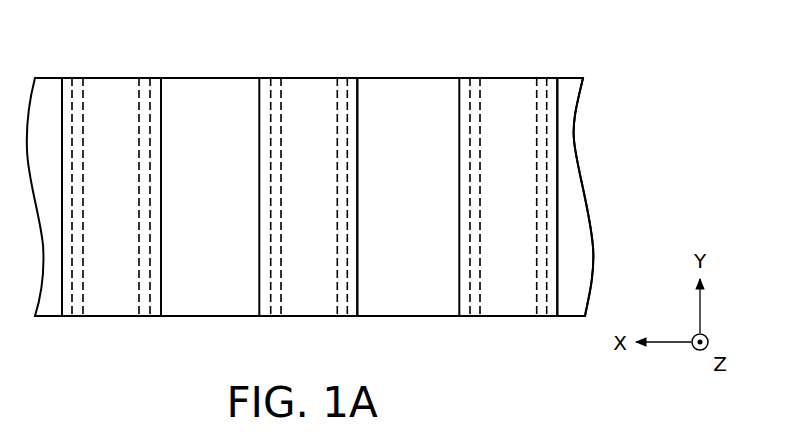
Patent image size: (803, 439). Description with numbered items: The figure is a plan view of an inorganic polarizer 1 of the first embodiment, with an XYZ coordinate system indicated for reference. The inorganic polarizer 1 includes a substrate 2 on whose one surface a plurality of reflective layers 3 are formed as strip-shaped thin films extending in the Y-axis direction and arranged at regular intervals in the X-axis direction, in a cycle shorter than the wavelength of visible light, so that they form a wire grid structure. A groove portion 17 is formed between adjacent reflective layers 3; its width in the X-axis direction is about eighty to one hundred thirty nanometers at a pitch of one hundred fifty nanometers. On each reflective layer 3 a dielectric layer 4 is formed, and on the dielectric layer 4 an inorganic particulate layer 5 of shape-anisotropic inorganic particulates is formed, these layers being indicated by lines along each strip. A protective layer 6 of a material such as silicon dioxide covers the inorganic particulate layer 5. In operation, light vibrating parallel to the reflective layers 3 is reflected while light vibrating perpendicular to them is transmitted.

The inorganic polarizer 1 is at (583, 60).
The substrate 2 is at (573, 191).
The reflective layer 3 is at (112, 85).
The dielectric layer 4 is at (80, 79).
The inorganic particulate layer 5 is at (147, 79).
The protective layer 6 is at (155, 79).
The groove portion 17 is at (207, 298).